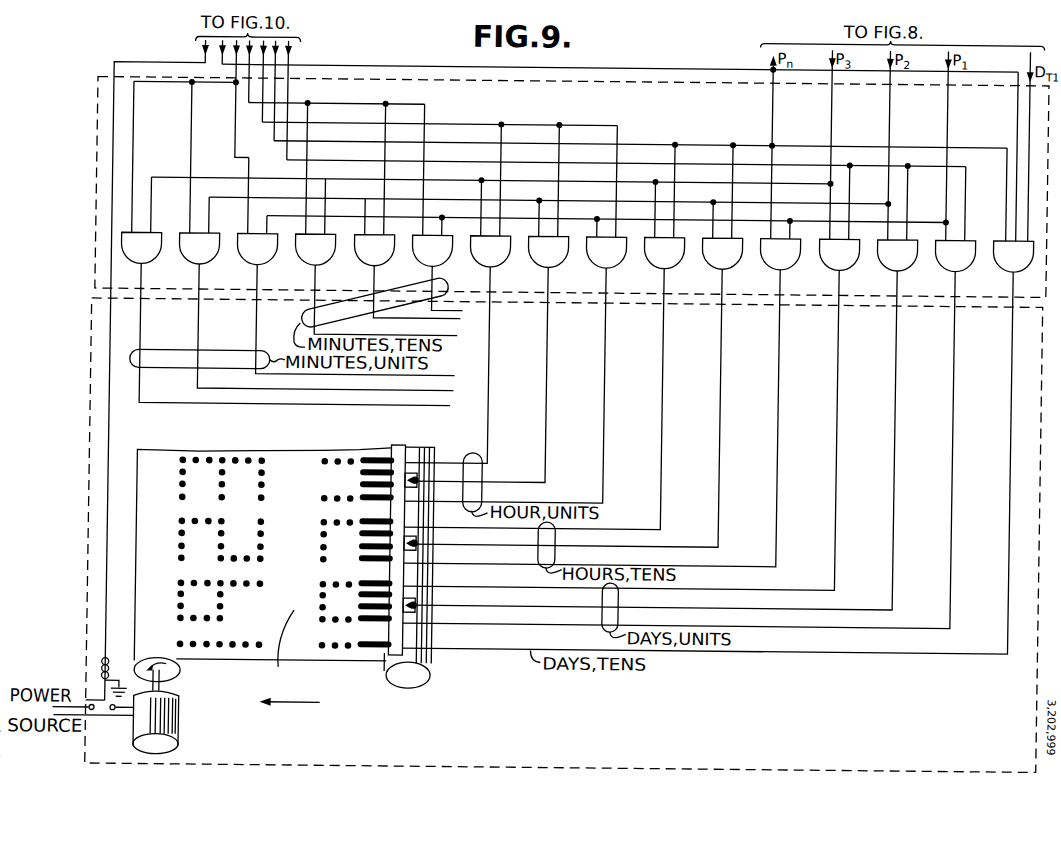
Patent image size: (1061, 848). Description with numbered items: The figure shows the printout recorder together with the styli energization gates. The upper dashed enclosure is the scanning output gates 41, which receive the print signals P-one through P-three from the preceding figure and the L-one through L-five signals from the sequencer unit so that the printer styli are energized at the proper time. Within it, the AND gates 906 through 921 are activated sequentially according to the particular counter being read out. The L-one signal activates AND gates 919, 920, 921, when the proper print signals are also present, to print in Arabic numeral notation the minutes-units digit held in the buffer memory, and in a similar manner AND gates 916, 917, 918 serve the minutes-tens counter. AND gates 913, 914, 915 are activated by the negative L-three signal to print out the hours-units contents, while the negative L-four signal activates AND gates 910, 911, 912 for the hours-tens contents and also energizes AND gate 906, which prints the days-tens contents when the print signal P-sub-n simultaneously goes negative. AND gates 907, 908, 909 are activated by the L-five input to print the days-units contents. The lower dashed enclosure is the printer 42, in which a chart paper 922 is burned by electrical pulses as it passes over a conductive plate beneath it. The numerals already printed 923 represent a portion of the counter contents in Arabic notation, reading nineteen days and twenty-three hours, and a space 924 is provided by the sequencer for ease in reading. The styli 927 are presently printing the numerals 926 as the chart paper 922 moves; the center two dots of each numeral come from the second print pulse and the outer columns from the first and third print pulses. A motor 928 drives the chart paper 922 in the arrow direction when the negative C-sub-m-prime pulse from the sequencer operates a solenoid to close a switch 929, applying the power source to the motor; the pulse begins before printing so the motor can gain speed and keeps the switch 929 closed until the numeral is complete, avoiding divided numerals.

The scanning output gates 41 is at (94, 257).
The printer 42 is at (95, 360).
The AND gate 906 is at (995, 233).
The AND gate 907 is at (972, 252).
The AND gate 908 is at (914, 252).
The AND gate 909 is at (856, 252).
The AND gate 910 is at (797, 252).
The AND gate 911 is at (739, 252).
The AND gate 912 is at (681, 252).
The AND gate 913 is at (623, 252).
The AND gate 914 is at (565, 252).
The AND gate 915 is at (507, 252).
The AND gate 916 is at (449, 252).
The AND gate 917 is at (391, 252).
The AND gate 918 is at (332, 252).
The AND gate 919 is at (274, 252).
The AND gate 920 is at (216, 252).
The AND gate 921 is at (158, 252).
The chart paper 922 is at (176, 434).
The numerals already printed 923 is at (215, 646).
The space 924 is at (290, 658).
The numerals being printed 926 is at (359, 647).
The styli 927 is at (380, 655).
The motor 928 is at (189, 715).
The switch 929 is at (112, 711).